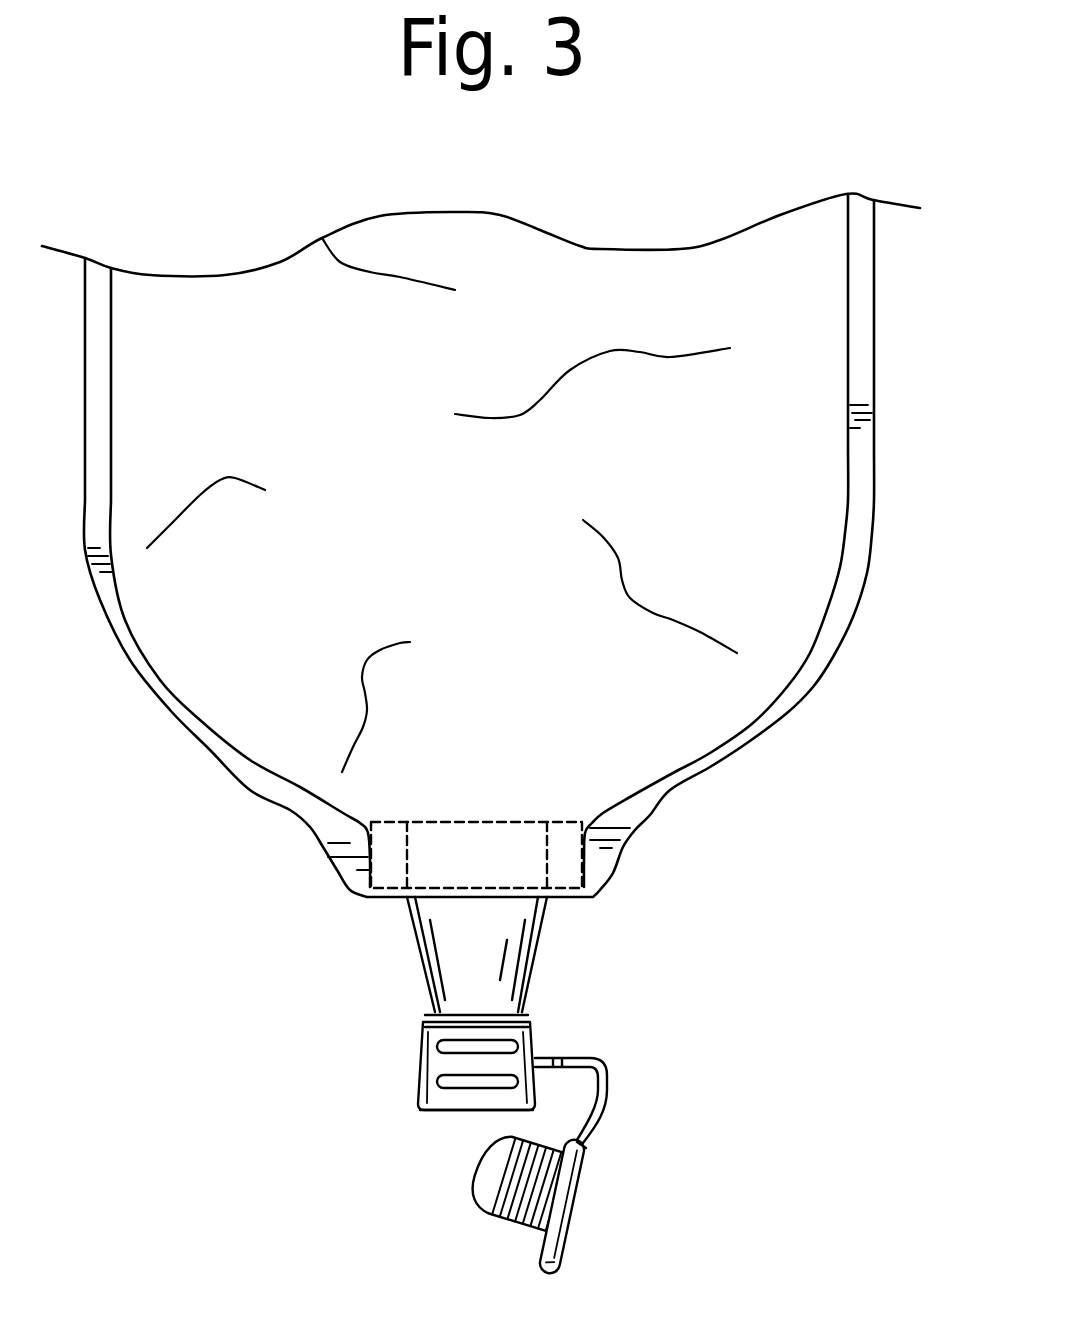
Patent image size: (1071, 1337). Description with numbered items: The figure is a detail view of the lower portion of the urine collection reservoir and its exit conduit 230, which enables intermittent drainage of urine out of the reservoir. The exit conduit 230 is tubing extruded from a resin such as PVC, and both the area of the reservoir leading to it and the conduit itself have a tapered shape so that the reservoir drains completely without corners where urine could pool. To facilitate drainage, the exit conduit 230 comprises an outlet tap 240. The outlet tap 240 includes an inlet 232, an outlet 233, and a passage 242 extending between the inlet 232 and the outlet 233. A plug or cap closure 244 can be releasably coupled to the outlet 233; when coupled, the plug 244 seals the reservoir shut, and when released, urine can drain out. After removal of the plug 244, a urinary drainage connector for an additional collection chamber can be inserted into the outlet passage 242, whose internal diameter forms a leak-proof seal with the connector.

The exit conduit 230 is at (303, 1007).
The inlet 232 is at (484, 820).
The outlet 233 is at (432, 1110).
The outlet tap 240 is at (535, 955).
The passage 242 is at (450, 1143).
The plug or cap closure 244 is at (582, 1212).